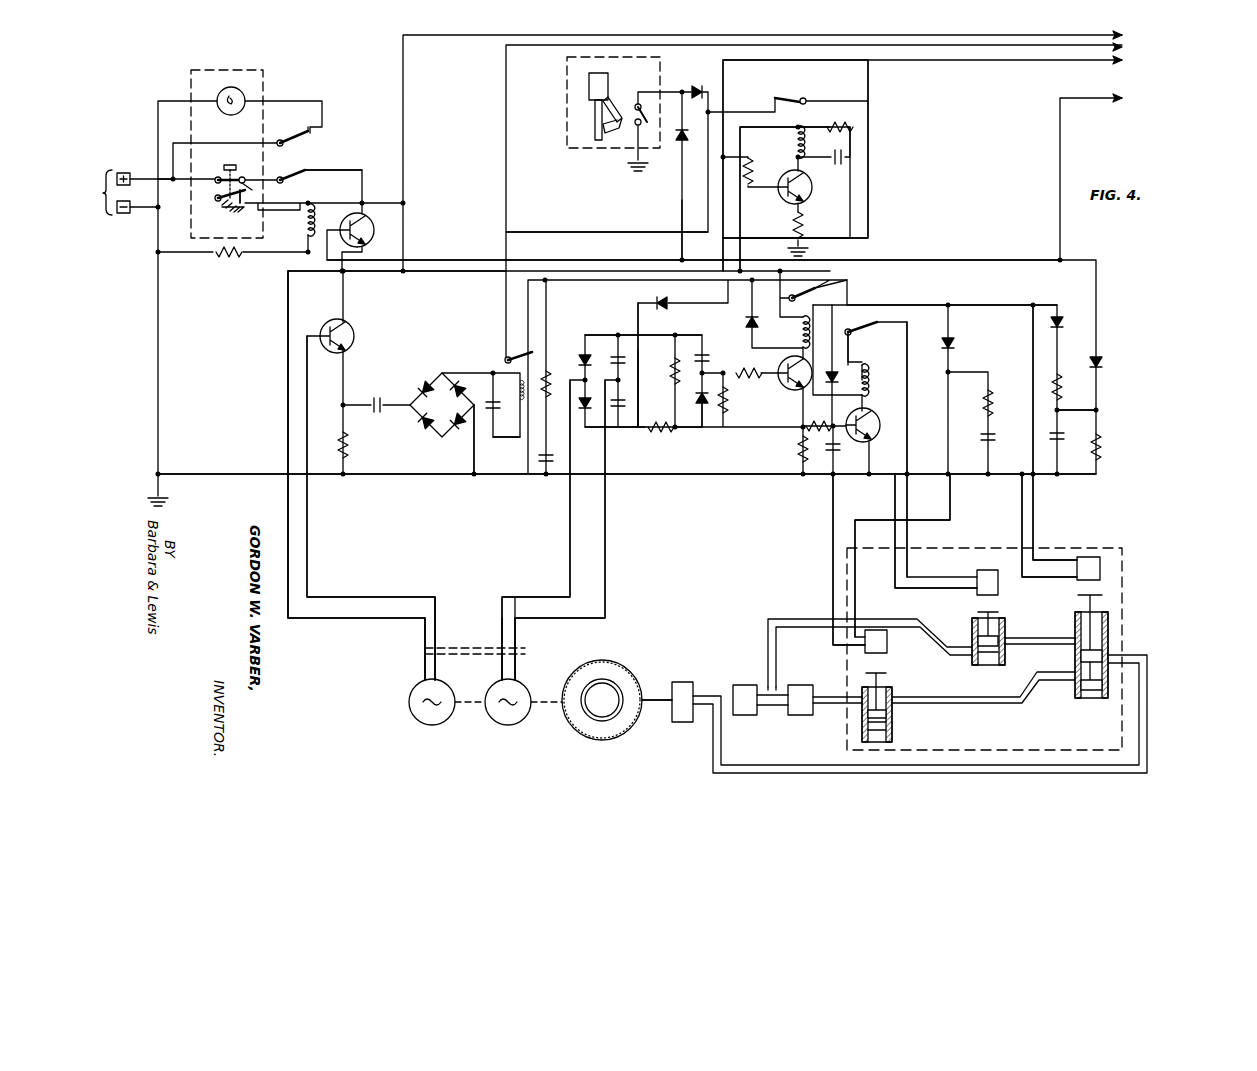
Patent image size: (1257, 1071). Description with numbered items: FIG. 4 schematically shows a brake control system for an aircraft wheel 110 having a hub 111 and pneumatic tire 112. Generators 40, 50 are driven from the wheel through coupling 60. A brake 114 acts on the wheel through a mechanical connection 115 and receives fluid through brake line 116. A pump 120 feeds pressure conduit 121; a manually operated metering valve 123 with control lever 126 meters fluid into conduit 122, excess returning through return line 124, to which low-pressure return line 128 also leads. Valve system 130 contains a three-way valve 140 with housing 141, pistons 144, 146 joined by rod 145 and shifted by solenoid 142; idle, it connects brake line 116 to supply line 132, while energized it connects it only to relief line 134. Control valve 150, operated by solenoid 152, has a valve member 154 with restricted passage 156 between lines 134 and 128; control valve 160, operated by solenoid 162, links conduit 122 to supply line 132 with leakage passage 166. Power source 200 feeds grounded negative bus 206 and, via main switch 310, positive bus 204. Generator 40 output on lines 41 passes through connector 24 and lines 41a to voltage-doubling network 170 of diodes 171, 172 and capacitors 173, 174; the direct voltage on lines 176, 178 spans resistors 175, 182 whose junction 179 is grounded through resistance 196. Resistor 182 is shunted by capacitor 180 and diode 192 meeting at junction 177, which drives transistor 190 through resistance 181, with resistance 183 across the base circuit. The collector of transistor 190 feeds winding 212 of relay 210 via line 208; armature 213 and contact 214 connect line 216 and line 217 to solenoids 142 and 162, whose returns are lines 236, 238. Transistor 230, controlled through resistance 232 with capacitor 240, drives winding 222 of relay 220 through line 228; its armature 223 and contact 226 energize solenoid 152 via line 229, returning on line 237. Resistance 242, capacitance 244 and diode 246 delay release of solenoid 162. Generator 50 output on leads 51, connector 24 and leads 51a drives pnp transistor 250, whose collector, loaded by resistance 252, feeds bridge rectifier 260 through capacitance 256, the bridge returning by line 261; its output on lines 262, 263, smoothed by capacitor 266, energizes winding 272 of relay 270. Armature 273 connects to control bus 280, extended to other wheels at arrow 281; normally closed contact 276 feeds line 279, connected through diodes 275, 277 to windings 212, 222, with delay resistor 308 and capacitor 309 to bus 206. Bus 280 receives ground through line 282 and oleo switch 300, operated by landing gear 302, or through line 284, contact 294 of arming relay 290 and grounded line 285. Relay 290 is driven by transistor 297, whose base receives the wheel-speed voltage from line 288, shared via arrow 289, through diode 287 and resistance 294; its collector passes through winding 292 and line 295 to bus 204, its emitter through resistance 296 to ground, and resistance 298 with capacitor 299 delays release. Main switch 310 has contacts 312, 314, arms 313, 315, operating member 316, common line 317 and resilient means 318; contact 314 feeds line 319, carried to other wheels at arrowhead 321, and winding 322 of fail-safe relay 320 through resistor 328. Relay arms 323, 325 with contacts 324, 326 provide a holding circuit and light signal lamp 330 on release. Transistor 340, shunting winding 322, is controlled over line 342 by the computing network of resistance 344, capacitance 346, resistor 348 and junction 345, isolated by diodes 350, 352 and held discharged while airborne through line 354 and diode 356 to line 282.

The generator lead 24 is at (425, 663).
The generator 40 is at (516, 724).
The generator lead 41 is at (510, 663).
The generator lead pair 41a is at (607, 559).
The generator 50 is at (440, 724).
The generator lead 51 is at (412, 686).
The generator lead pair 51a is at (302, 533).
The coupling 60 is at (476, 713).
The wheel 110 is at (633, 672).
The hub 111 is at (605, 712).
The tire 112 is at (585, 734).
The gear box 114 is at (695, 685).
The shaft 115 is at (663, 734).
The return line 116 is at (710, 740).
The pump 120 is at (743, 719).
The pump motor 121 is at (790, 718).
The supply line 122 is at (828, 699).
The pump shaft 123 is at (804, 716).
The pump outlet 124 is at (783, 685).
The outlet line 126 is at (813, 678).
The pressure line 128 is at (818, 613).
The valve assembly 130 is at (1130, 592).
The hydraulic line 132 is at (973, 710).
The hydraulic line 134 is at (1033, 638).
The control cylinder 140 is at (1115, 634).
The piston rod 141 is at (1108, 613).
The solenoid 142 is at (1100, 563).
The piston 144 is at (1106, 641).
The piston rod 145 is at (1085, 672).
The piston 146 is at (1090, 692).
The valve cylinder 150 is at (963, 631).
The solenoid 152 is at (998, 583).
The cylinder wall 154 is at (974, 662).
The piston 156 is at (998, 648).
The valve cylinder 160 is at (898, 712).
The solenoid 162 is at (887, 645).
The piston 166 is at (886, 727).
The supply line 170 is at (615, 332).
The diode 171 is at (578, 358).
The diode 172 is at (584, 412).
The capacitor 173 is at (613, 357).
The capacitor 174 is at (625, 402).
The resistor 175 is at (664, 434).
The conductor 176 is at (624, 430).
The zener diode 177 is at (702, 393).
The resistor 178 is at (652, 350).
The conductor 179 is at (676, 428).
The capacitor 180 is at (702, 352).
The resistor 181 is at (740, 368).
The conductor 182 is at (670, 380).
The resistor 183 is at (728, 400).
The transistor 190 is at (783, 360).
The conductor 192 is at (705, 405).
The resistor 196 is at (800, 450).
The battery 200 is at (106, 192).
The conductor 204 is at (595, 260).
The ground conductor 206 is at (162, 386).
The conductor 208 is at (806, 269).
The relay 210 is at (822, 325).
The relay coil 212 is at (798, 333).
The relay armature 213 is at (818, 295).
The relay contact 214 is at (823, 298).
The conductor 216 is at (924, 303).
The conductor 217 is at (1036, 510).
The relay coil 220 is at (876, 371).
The relay 222 is at (876, 390).
The relay armature 223 is at (870, 337).
The relay contact 226 is at (880, 327).
The conductor 228 is at (836, 284).
The conductor 229 is at (907, 483).
The transistor 230 is at (870, 440).
The resistor 232 is at (821, 422).
The conductor 236 is at (1022, 540).
The conductor 237 is at (894, 502).
The conductor 238 is at (832, 505).
The capacitor 240 is at (833, 452).
The resistor 242 is at (992, 390).
The capacitor 244 is at (988, 442).
The diode 246 is at (953, 345).
The transistor 250 is at (352, 332).
The resistor 252 is at (345, 446).
The capacitor 256 is at (376, 400).
The rectifier bridge 260 is at (424, 375).
The conductor 261 is at (473, 460).
The diode 262 is at (458, 380).
The conductor 263 is at (508, 443).
The capacitor 266 is at (492, 402).
The switch contact 270 is at (506, 353).
The relay coil 272 is at (518, 404).
The switch arm 273 is at (530, 325).
The diode 275 is at (748, 325).
The switch 276 is at (525, 340).
The diode 277 is at (855, 390).
The diode 279 is at (618, 302).
The conductor 280 is at (565, 232).
The conductor 281 is at (1124, 47).
The diode 282 is at (666, 92).
The switch 284 is at (774, 91).
The oscillator circuit 285 is at (878, 192).
The conductor 287 is at (668, 310).
The conductor 288 is at (728, 266).
The conductor 289 is at (1124, 60).
The oscillator 290 is at (788, 132).
The inductor 292 is at (802, 142).
The resistor 294 is at (777, 107).
The conductor 295 is at (747, 260).
The resistor 296 is at (804, 226).
The transistor 297 is at (806, 201).
The resistor 298 is at (850, 125).
The capacitor 299 is at (836, 163).
The relay 300 is at (630, 72).
The relay armature 302 is at (589, 100).
The resistor 308 is at (544, 420).
The capacitor 309 is at (546, 478).
The switch 310 is at (252, 168).
The switch arm 312 is at (252, 190).
The switch contact 313 is at (217, 177).
The conductor 314 is at (244, 206).
The switch contact 315 is at (215, 198).
The push button 316 is at (238, 163).
The conductor 317 is at (145, 175).
The spring 318 is at (230, 214).
The conductor 319 is at (403, 182).
The switch 320 is at (335, 122).
The conductor 321 is at (1124, 35).
The relay coil 322 is at (312, 216).
The switch contact 323 is at (304, 172).
The conductor 324 is at (330, 173).
The switch contact 325 is at (310, 138).
The switch arm 326 is at (302, 132).
The resistor 328 is at (224, 258).
The indicator lamp 330 is at (243, 92).
The transistor 340 is at (376, 230).
The conductor 342 is at (1122, 100).
The resistor 344 is at (1060, 372).
The conductor 345 is at (1100, 410).
The capacitor 346 is at (1057, 440).
The resistor 348 is at (1102, 445).
The diode 350 is at (1062, 324).
The diode 352 is at (1101, 362).
The conductor 354 is at (682, 218).
The diode 356 is at (677, 148).